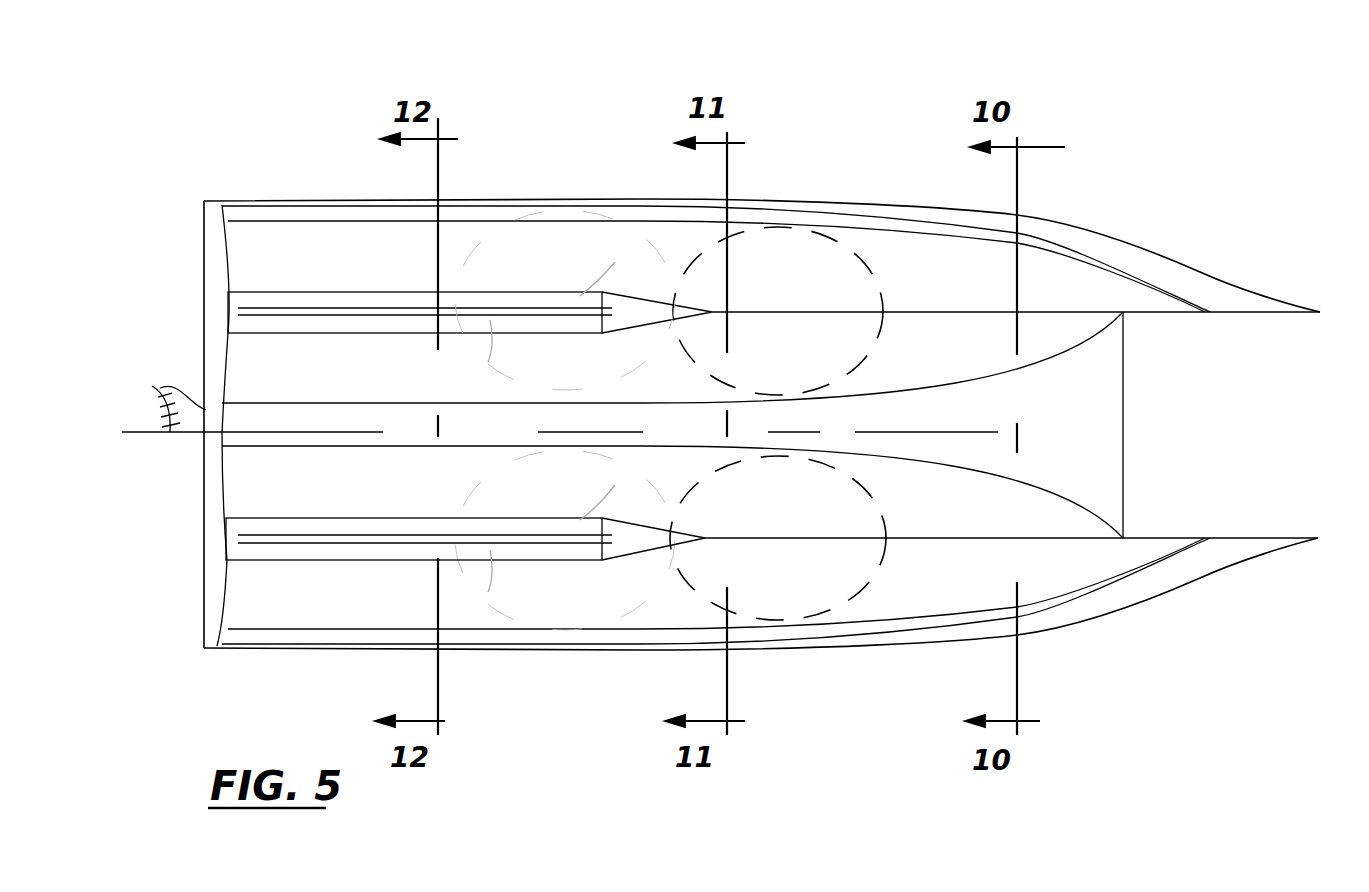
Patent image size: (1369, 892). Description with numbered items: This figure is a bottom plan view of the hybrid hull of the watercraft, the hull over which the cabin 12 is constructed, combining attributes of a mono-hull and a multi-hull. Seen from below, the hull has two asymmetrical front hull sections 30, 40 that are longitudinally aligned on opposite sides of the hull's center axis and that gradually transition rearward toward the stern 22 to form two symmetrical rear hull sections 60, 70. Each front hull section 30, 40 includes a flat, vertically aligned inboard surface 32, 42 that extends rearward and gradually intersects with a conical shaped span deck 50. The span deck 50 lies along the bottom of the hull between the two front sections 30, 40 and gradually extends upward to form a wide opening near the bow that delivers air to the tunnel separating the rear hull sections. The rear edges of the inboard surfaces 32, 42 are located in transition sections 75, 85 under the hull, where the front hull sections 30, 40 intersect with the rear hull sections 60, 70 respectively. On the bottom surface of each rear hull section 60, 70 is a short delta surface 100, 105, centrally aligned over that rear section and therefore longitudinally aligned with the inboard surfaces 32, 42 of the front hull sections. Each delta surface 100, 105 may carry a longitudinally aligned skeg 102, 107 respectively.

The cabin 12 is at (250, 118).
The stern 22 is at (169, 425).
The front hull section 30 is at (1278, 560).
The inboard surface 32 is at (1226, 538).
The front hull section 40 is at (1258, 315).
The inboard surface 42 is at (1186, 316).
The span deck 50 is at (1093, 417).
The rear hull section 60 is at (248, 613).
The rear hull section 70 is at (243, 262).
The transition section 75 is at (862, 525).
The transition section 85 is at (850, 292).
The delta surface 100 is at (619, 494).
The skeg 102 is at (510, 578).
The delta surface 105 is at (619, 271).
The skeg 107 is at (510, 348).